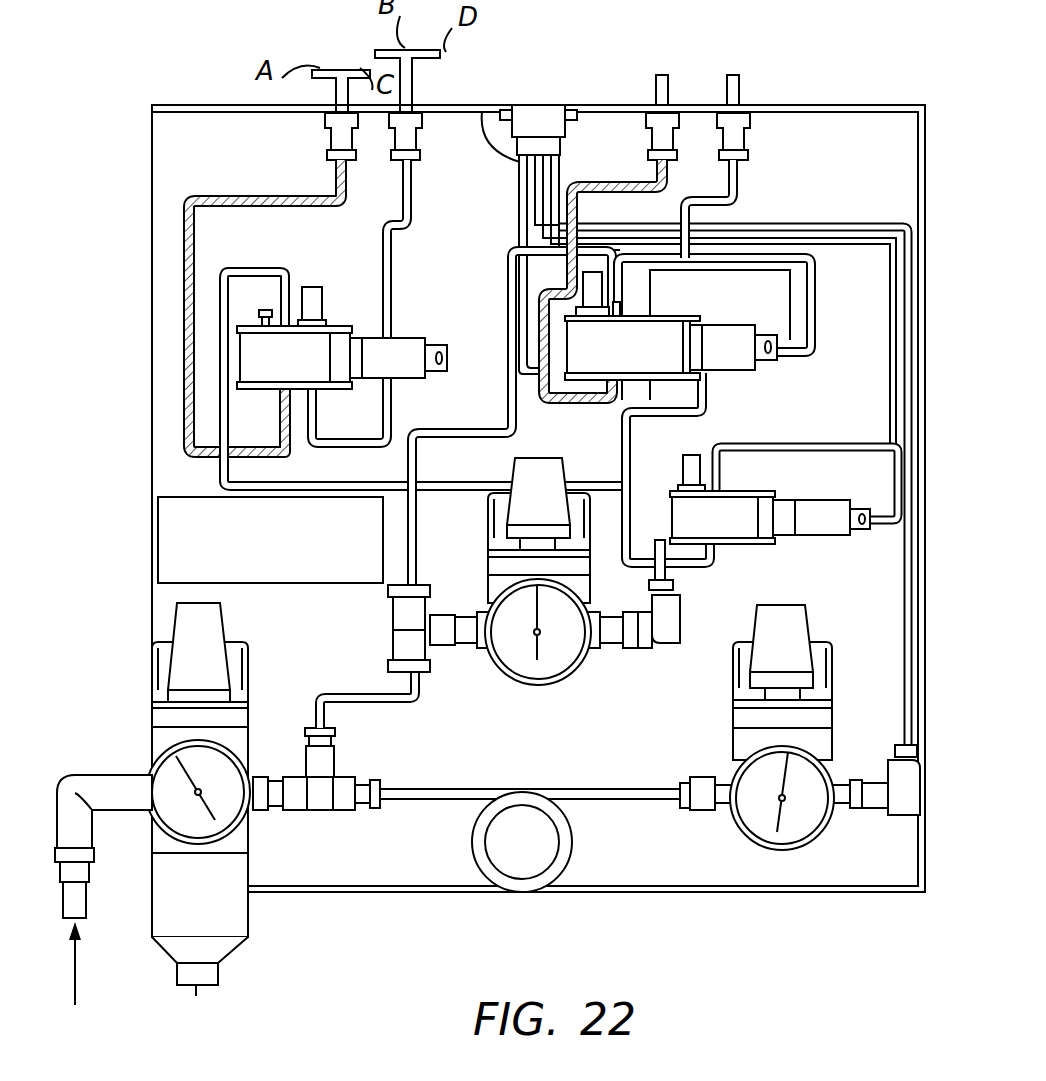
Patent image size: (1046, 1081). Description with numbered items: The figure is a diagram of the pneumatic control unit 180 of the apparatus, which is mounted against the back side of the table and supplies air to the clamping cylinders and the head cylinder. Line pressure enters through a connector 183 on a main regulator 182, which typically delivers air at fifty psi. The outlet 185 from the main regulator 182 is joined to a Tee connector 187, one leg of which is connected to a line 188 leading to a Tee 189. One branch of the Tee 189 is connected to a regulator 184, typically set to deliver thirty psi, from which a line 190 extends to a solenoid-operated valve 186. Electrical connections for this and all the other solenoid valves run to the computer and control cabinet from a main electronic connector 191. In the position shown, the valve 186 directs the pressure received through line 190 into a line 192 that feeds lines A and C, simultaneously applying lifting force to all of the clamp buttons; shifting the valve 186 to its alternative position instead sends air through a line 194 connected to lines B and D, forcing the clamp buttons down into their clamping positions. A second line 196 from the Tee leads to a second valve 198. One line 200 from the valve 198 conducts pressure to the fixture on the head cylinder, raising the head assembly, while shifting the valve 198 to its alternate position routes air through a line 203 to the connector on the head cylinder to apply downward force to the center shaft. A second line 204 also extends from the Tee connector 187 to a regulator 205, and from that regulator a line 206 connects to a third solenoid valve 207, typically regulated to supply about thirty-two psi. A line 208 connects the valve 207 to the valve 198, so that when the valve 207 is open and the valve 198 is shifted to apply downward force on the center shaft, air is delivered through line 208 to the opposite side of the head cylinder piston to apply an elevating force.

The pneumatic control unit 180 is at (826, 100).
The main regulator 182 is at (238, 905).
The connector 183 is at (100, 782).
The regulator 184 is at (497, 566).
The outlet 185 is at (262, 808).
The solenoid-operated valve 186 is at (318, 355).
The Tee connector 187 is at (345, 806).
The line 188 is at (378, 700).
The Tee 189 is at (398, 622).
The line 190 is at (673, 594).
The main electronic connector 191 is at (540, 112).
The line 192 is at (270, 195).
The line 194 is at (412, 240).
The second line 196 is at (419, 470).
The second valve 198 is at (672, 355).
The line 200 is at (637, 186).
The line 203 is at (745, 200).
The second line 204 is at (535, 800).
The regulator 205 is at (740, 727).
The line 206 is at (905, 690).
The third solenoid valve 207 is at (735, 505).
The line 208 is at (628, 460).